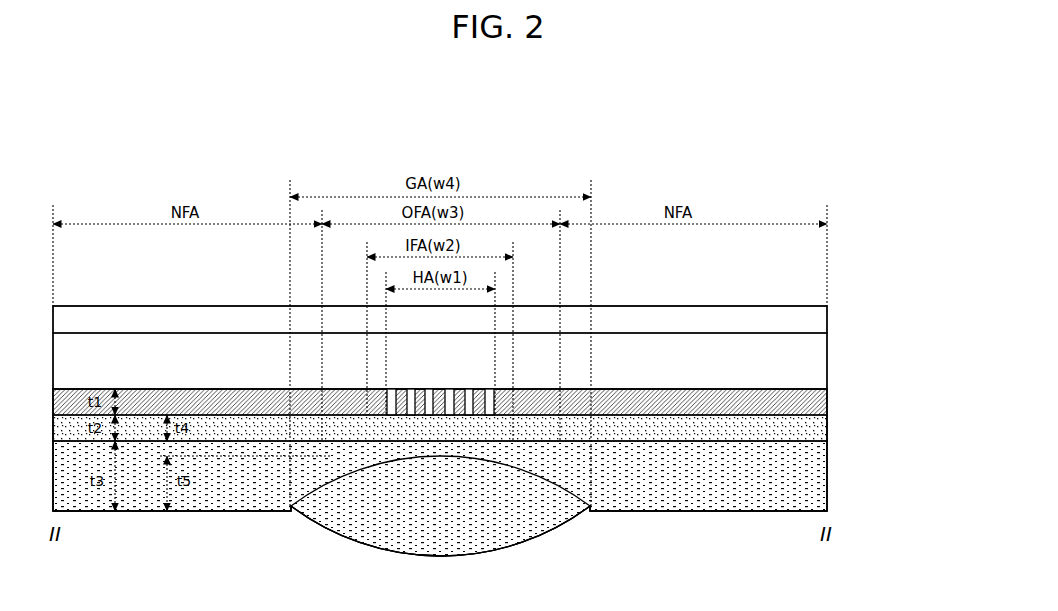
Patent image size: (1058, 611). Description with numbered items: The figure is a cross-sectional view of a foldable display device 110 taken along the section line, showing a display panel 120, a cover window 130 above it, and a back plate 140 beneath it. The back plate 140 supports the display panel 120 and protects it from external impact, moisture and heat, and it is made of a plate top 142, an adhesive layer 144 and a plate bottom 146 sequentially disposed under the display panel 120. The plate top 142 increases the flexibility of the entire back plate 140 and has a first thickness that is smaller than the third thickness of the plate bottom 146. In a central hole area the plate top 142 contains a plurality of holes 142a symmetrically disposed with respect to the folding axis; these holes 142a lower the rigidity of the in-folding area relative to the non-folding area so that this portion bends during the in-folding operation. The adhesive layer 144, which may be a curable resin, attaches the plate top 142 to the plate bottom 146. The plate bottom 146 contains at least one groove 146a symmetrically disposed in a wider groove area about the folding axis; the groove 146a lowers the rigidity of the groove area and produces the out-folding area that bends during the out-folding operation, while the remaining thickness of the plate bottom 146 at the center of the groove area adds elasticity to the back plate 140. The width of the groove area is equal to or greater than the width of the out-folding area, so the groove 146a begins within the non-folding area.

The foldable display device 110 is at (423, 118).
The cover window 130 is at (829, 324).
The display panel 120 is at (829, 362).
The back plate 140 is at (912, 402).
The plate top 142 is at (829, 401).
The holes 142a is at (425, 388).
The adhesive layer 144 is at (829, 430).
The plate bottom 146 is at (829, 480).
The groove 146a is at (402, 485).